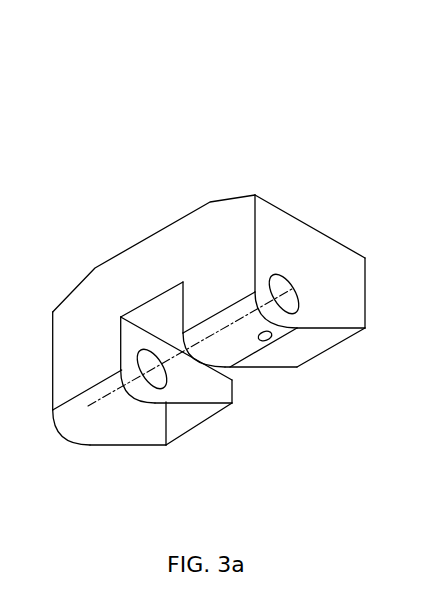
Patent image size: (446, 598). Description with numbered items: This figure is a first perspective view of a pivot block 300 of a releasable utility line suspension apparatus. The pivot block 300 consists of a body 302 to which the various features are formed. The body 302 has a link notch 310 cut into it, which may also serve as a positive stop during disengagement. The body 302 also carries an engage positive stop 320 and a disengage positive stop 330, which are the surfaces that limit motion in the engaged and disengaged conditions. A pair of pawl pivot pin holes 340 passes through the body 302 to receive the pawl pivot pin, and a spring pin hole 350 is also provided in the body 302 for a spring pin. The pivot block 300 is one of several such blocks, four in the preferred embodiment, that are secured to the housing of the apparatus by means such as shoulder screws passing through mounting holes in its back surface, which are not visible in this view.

The pivot block 300 is at (109, 45).
The body 302 is at (105, 295).
The link notch 310 is at (172, 315).
The engage positive stop 320 is at (168, 424).
The disengage positive stop 330 is at (78, 432).
The pawl pivot pin hole 340 is at (284, 292).
The spring pin hole 350 is at (270, 331).